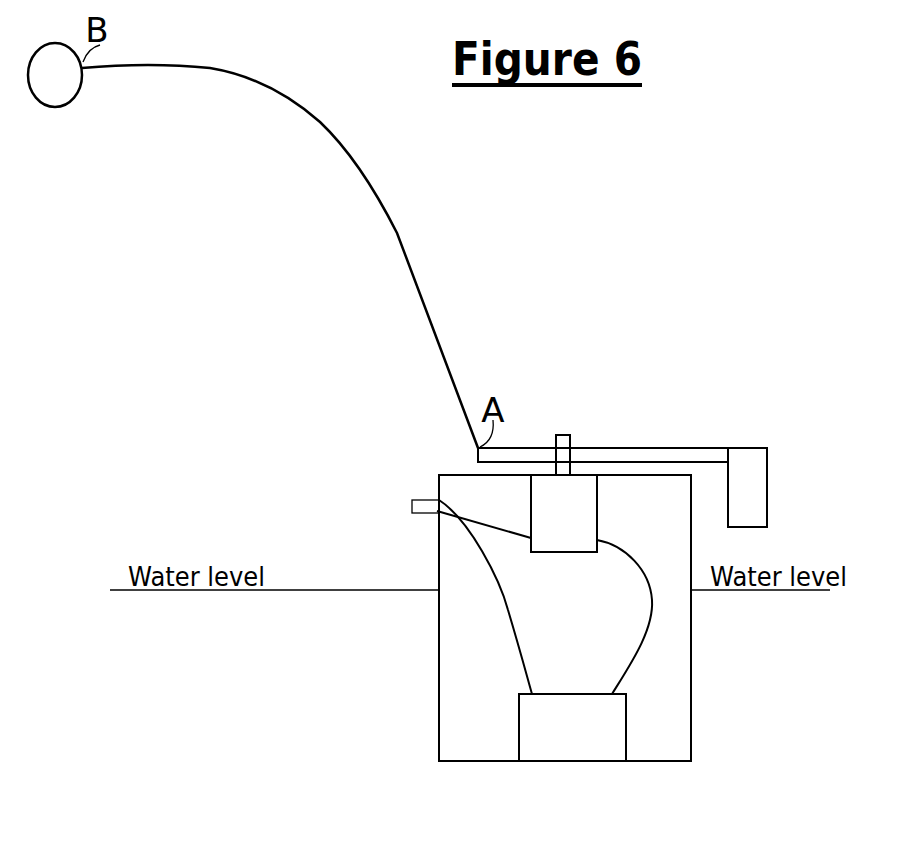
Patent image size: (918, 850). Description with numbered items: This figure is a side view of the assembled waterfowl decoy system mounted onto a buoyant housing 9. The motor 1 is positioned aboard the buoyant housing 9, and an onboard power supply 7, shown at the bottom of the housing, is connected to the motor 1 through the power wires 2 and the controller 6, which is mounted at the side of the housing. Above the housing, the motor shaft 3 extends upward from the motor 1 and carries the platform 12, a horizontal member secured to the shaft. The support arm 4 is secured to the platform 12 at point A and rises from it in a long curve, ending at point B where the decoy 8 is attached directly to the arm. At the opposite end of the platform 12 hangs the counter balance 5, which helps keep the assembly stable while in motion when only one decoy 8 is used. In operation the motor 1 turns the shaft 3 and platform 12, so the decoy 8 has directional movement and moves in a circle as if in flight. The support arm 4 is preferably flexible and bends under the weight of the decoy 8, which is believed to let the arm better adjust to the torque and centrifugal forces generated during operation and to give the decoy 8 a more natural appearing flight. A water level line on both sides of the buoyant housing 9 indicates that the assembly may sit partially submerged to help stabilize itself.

The motor 1 is at (564, 513).
The power wires 2 is at (637, 590).
The motor shaft 3 is at (570, 423).
The support arm 4 is at (400, 238).
The counter balance 5 is at (747, 487).
The controller 6 is at (412, 507).
The power supply 7 is at (572, 728).
The decoy 8 is at (55, 75).
The buoyant housing 9 is at (466, 762).
The platform 12 is at (635, 448).